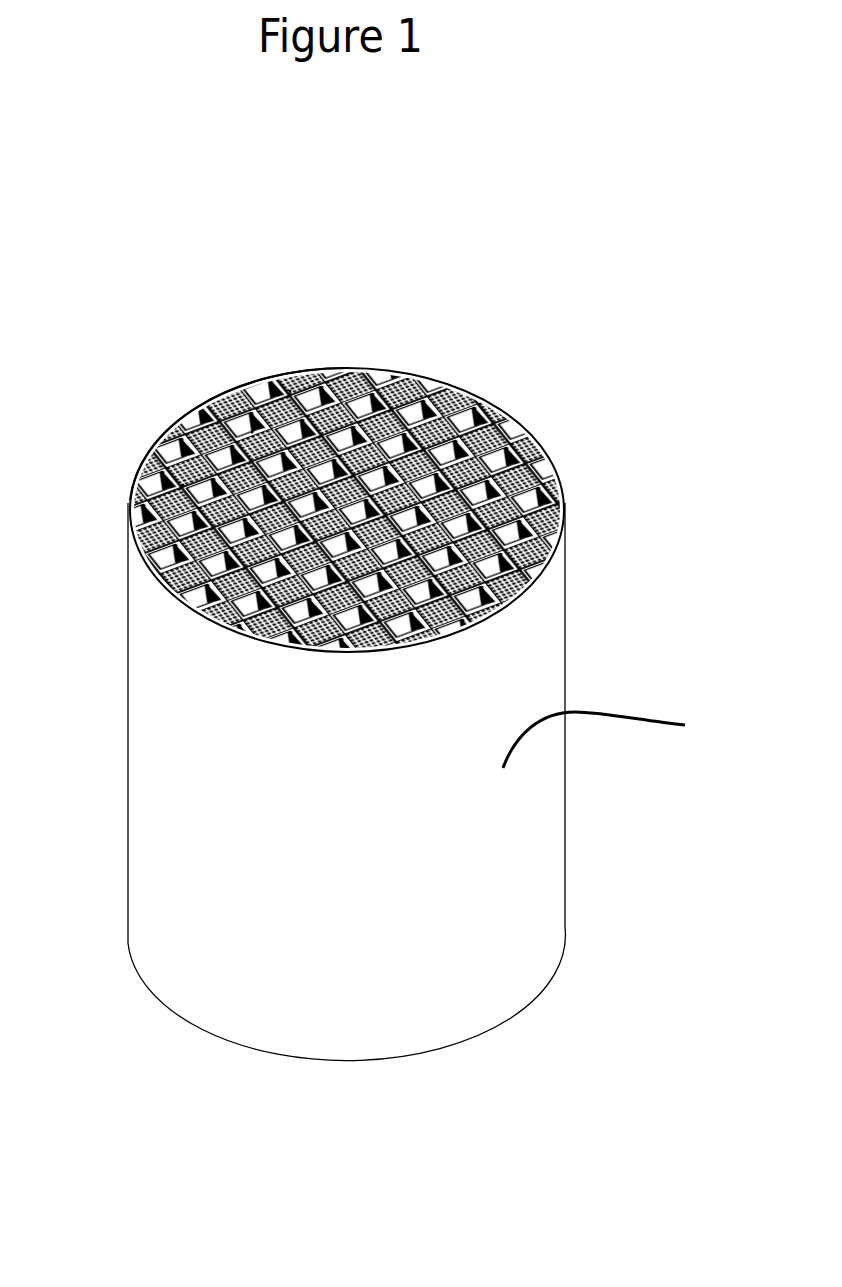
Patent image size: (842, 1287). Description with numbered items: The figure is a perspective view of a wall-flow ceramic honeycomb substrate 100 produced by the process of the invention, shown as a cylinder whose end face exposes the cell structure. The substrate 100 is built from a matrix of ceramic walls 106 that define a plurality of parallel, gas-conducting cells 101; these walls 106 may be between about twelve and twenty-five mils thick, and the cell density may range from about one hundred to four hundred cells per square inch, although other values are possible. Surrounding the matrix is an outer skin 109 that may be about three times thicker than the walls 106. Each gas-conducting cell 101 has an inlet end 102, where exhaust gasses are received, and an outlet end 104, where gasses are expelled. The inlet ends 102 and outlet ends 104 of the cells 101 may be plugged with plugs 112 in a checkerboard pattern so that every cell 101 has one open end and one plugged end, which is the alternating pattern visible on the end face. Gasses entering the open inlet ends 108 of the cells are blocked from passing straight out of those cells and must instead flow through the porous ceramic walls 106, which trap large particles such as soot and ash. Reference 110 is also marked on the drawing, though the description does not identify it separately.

The wall-flow ceramic honeycomb substrate 100 is at (484, 378).
The gas-conducting cells 101 is at (182, 485).
The inlet ends 102 is at (520, 420).
The outlet ends 104 is at (457, 1038).
The ceramic walls 106 is at (384, 380).
The open inlet ends 108 is at (252, 430).
The outer skin 109 is at (621, 739).
The inlet side end face 110 is at (207, 407).
The plugs 112 is at (290, 390).